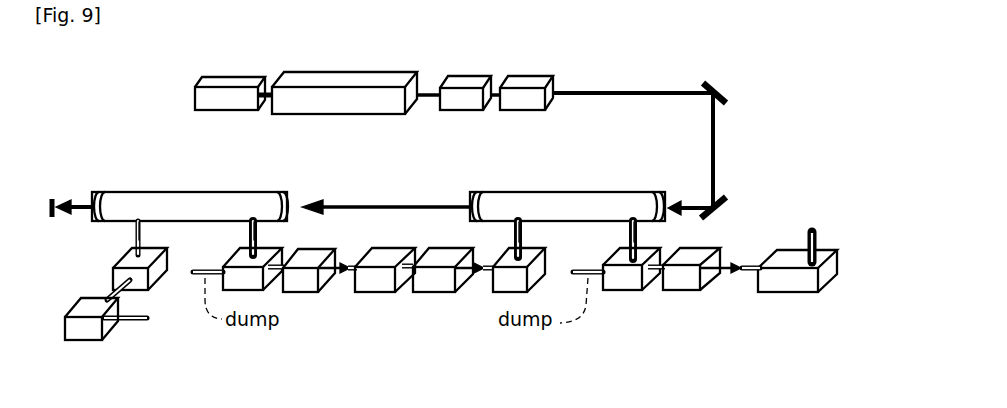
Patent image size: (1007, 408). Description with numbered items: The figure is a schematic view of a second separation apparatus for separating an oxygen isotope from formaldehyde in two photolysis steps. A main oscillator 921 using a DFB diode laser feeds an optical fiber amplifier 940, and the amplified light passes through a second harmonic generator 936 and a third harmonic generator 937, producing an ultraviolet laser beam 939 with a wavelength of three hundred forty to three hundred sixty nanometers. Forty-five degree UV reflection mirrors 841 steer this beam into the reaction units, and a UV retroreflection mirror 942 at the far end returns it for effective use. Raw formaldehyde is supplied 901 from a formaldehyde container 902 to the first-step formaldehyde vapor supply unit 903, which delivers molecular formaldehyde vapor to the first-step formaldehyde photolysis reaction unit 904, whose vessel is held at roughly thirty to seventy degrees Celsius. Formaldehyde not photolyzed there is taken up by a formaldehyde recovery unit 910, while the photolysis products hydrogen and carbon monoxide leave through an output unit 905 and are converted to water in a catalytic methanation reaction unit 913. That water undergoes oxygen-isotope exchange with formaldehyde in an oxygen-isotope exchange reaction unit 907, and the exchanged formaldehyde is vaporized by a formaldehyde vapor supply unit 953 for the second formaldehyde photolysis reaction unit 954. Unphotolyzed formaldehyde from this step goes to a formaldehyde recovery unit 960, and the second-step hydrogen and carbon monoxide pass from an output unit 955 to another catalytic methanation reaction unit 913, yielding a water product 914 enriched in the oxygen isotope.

The main oscillator 921 is at (230, 94).
The optical fiber amplifier 940 is at (344, 93).
The second harmonic generator 936 is at (465, 94).
The third harmonic generator 937 is at (526, 94).
The ultraviolet laser beam 939 is at (657, 96).
The reflecting mirror 841 is at (728, 206).
The first-step formaldehyde photolysis reaction unit 904 is at (190, 206).
The second formaldehyde photolysis reaction unit 954 is at (567, 206).
The UV retroreflection mirror 942 is at (52, 196).
The first-step formaldehyde vapor supply unit 903 is at (122, 257).
The formaldehyde container 902 is at (91, 320).
The formaldehyde supply 901 is at (127, 326).
The formaldehyde recovery unit 910 is at (252, 270).
The output unit 905 is at (309, 271).
The catalytic methanation reaction unit 913 is at (596, 270).
The oxygen-isotope exchange reaction unit 907 is at (443, 270).
The formaldehyde vapor supply unit 953 is at (519, 270).
The formaldehyde recovery unit 960 is at (631, 269).
The output unit 955 is at (691, 269).
The water product 914 is at (813, 228).